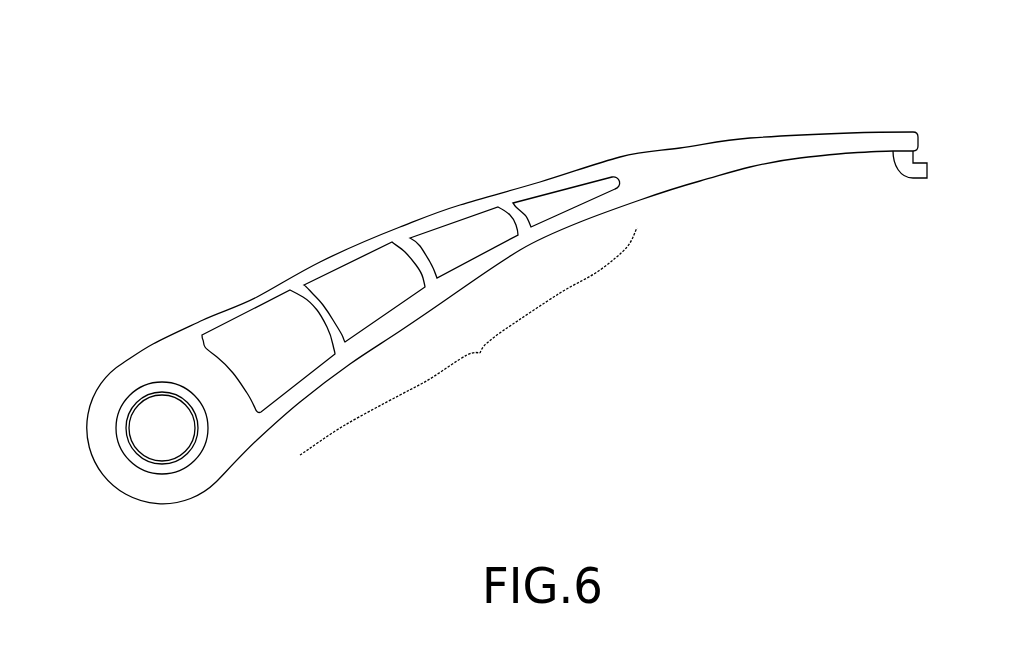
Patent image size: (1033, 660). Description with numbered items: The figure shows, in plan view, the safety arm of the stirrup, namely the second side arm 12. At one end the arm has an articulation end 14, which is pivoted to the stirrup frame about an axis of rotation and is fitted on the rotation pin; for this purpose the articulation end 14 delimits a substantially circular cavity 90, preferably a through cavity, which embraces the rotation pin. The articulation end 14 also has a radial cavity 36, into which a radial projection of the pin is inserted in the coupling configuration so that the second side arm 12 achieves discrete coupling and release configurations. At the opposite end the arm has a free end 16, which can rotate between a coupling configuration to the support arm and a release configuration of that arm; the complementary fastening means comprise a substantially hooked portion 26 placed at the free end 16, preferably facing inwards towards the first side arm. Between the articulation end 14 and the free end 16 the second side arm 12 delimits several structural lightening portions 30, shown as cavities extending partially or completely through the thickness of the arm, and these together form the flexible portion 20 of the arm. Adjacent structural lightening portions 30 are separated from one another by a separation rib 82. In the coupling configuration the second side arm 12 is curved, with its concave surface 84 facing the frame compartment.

The second side arm 12 is at (257, 105).
The articulation end 14 is at (210, 500).
The free end 16 is at (867, 168).
The flexible portion 20 is at (468, 341).
The hooked portion 26 is at (908, 185).
The structural lightening portions 30 is at (258, 337).
The radial cavity 36 is at (163, 465).
The separation rib 82 is at (326, 300).
The concave surface 84 is at (483, 275).
The circular cavity 90 is at (170, 417).